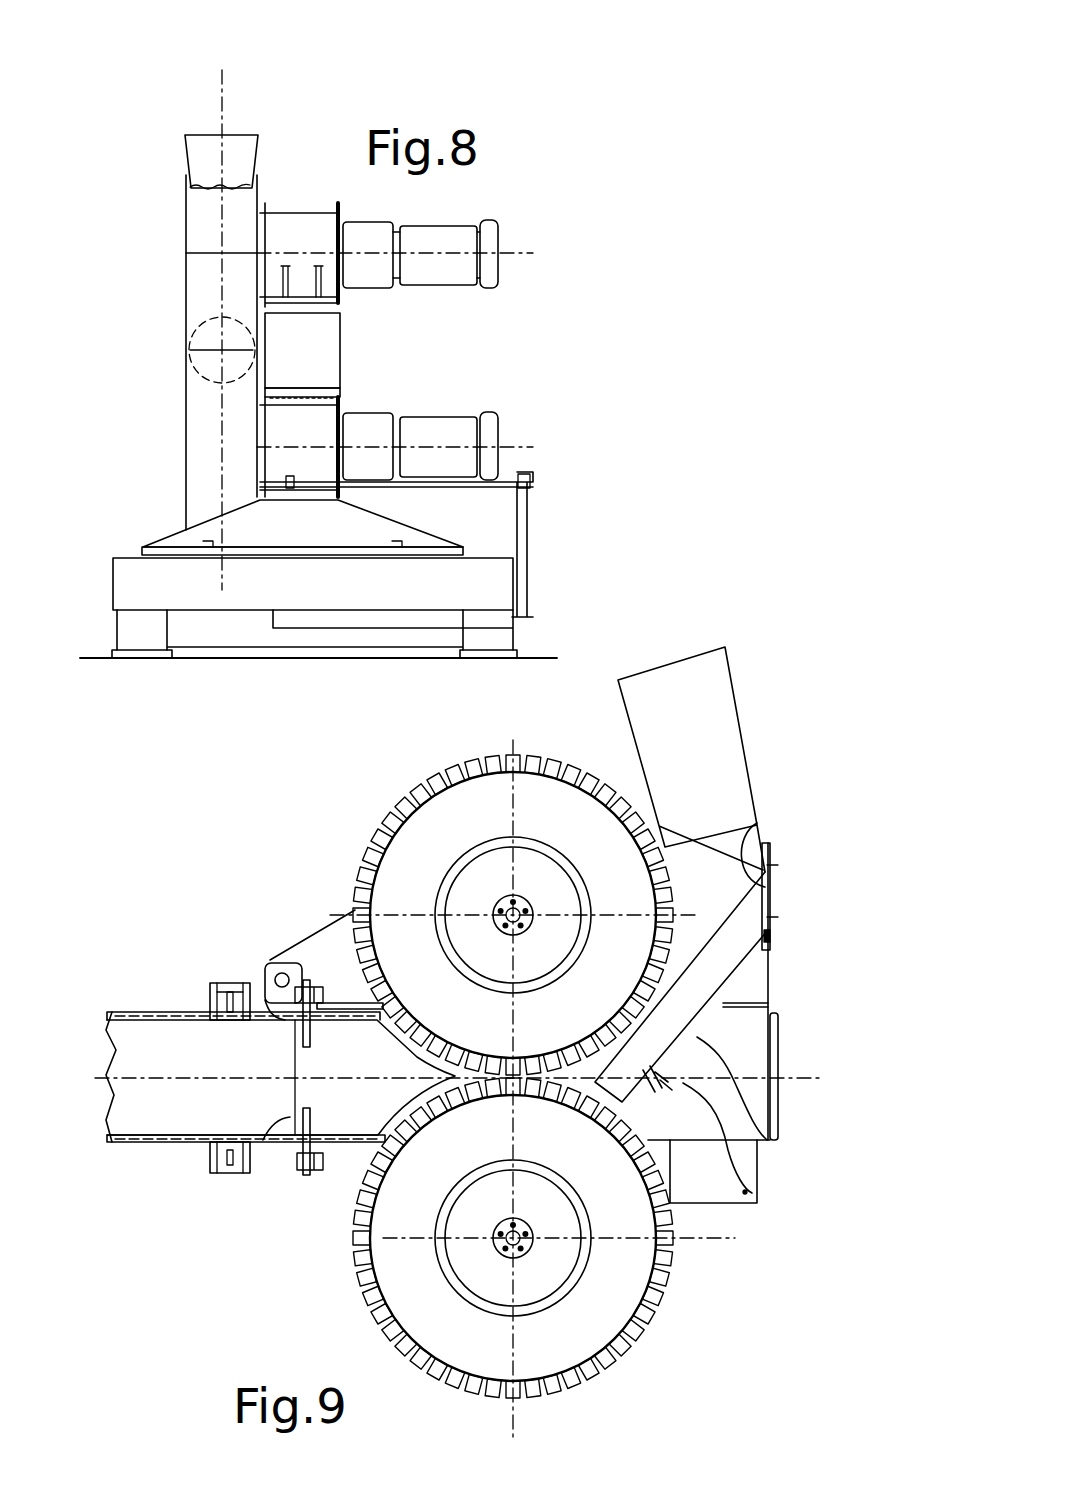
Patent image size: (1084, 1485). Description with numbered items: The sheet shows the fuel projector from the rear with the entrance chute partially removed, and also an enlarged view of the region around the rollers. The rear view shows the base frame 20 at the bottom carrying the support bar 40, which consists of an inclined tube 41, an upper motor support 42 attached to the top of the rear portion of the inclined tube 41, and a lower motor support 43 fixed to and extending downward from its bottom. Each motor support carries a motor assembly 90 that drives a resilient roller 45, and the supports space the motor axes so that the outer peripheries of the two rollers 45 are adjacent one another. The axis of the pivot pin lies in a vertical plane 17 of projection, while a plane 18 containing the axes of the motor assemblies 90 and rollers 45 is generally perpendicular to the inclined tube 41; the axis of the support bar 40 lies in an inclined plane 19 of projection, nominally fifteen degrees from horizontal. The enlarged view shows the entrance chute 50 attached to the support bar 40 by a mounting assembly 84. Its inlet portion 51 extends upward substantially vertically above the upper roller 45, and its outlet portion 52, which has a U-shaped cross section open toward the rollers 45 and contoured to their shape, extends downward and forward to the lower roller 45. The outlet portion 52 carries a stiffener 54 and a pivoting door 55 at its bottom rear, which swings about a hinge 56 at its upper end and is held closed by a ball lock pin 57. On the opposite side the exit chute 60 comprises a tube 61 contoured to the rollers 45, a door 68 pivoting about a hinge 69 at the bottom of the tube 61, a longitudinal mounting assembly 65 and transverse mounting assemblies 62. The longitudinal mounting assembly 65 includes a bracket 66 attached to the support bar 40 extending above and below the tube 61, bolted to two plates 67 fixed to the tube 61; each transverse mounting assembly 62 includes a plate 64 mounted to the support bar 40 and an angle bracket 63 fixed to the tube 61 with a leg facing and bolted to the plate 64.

In FIG. 8, the vertical plane of projection 17 is at (220, 102).
In FIG. 9, the plane containing the axes of the motor assemblies 18 is at (513, 720).
In FIG. 9, the inclined plane of projection 19 is at (787, 1075).
In FIG. 8, the base frame 20 is at (100, 588).
In FIG. 9, the support bar 40 is at (782, 1030).
In FIG. 8, the inclined tube 41 is at (340, 338).
In FIG. 8, the upper motor support 42 is at (338, 212).
In FIG. 9, the upper motor support 42 is at (302, 942).
In FIG. 8, the lower motor support 43 is at (350, 397).
In FIG. 8, the resilient roller 45 is at (186, 415).
In FIG. 9, the resilient roller 45 is at (372, 862).
In FIG. 8, the entrance chute 50 is at (246, 123).
In FIG. 9, the entrance chute 50 is at (690, 641).
In FIG. 9, the inlet portion 51 is at (740, 702).
In FIG. 9, the outlet portion 52 is at (768, 968).
In FIG. 9, the stiffener 54 is at (752, 812).
In FIG. 9, the door 55 is at (767, 1140).
In FIG. 9, the hinge 56 is at (775, 940).
In FIG. 9, the ball lock pin 57 is at (757, 1190).
In FIG. 9, the exit chute 60 is at (115, 1010).
In FIG. 9, the tube 61 is at (130, 1012).
In FIG. 9, the transverse mounting assembly 62 is at (234, 1192).
In FIG. 9, the angle bracket 63 is at (228, 984).
In FIG. 9, the plate 64 is at (208, 1000).
In FIG. 9, the longitudinal mounting assembly 65 is at (302, 1185).
In FIG. 9, the bracket 66 is at (330, 1150).
In FIG. 9, the plates 67 is at (275, 965).
In FIG. 9, the door 68 is at (125, 1145).
In FIG. 9, the hinge 69 is at (182, 1150).
In FIG. 9, the mounting assembly 84 is at (775, 898).
In FIG. 8, the motor assembly 90 is at (432, 222).